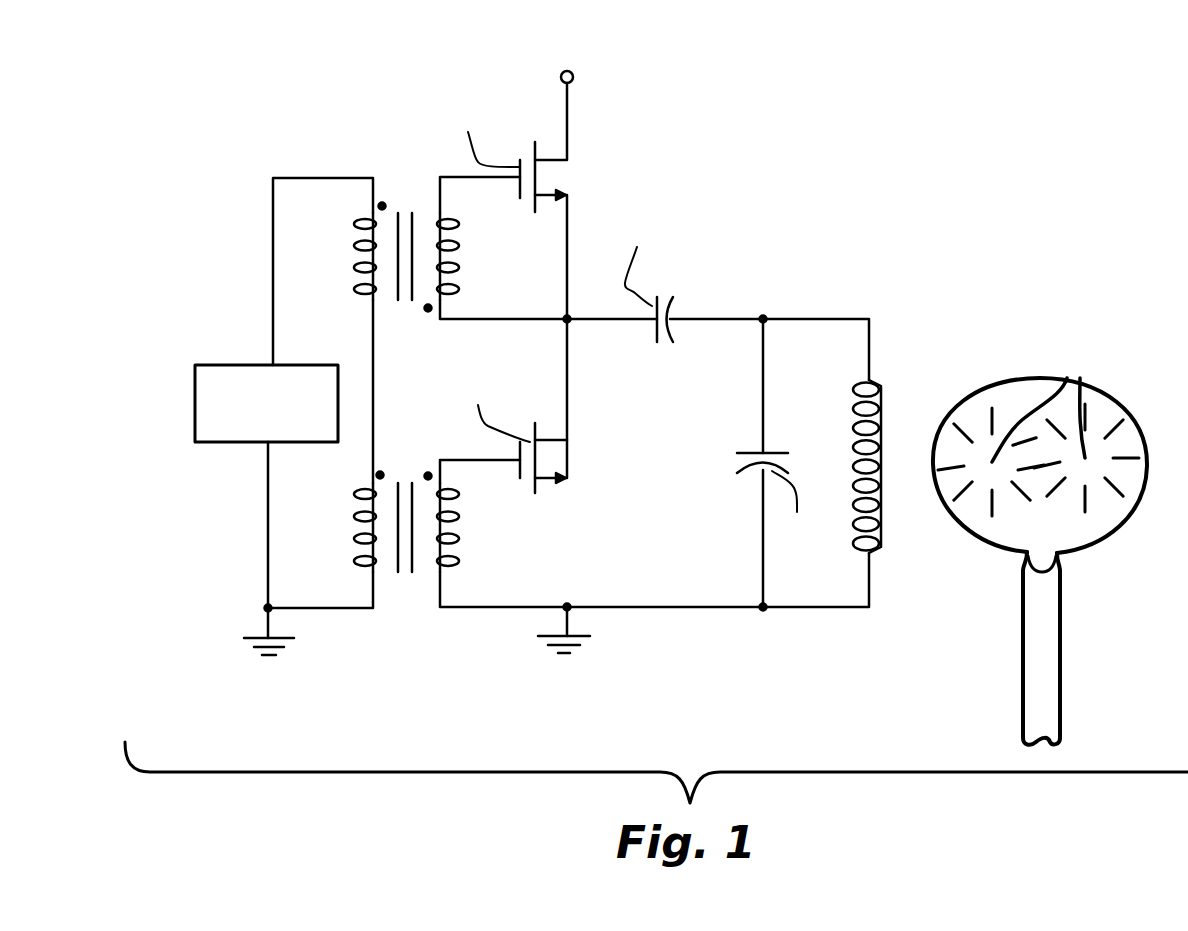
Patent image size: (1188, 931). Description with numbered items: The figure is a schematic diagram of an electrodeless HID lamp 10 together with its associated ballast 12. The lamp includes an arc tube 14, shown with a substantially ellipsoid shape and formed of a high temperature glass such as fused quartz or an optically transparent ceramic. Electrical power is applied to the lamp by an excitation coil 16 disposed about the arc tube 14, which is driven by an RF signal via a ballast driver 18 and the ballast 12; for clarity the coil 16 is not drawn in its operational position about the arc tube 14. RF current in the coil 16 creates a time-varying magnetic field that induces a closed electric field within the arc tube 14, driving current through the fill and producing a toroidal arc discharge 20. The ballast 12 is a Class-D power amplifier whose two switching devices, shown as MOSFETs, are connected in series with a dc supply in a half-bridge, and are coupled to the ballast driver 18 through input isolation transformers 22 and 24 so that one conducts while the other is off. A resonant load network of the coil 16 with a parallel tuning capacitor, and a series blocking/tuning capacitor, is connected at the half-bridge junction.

The electrodeless HID lamp 10 is at (950, 238).
The ballast 12 is at (248, 258).
The arc tube 14 is at (1113, 530).
The excitation coil 16 is at (887, 402).
The ballast driver 18 is at (252, 443).
The toroidal arc discharge 20 is at (1080, 378).
The input isolation transformer 22 is at (412, 216).
The input isolation transformer 24 is at (394, 572).